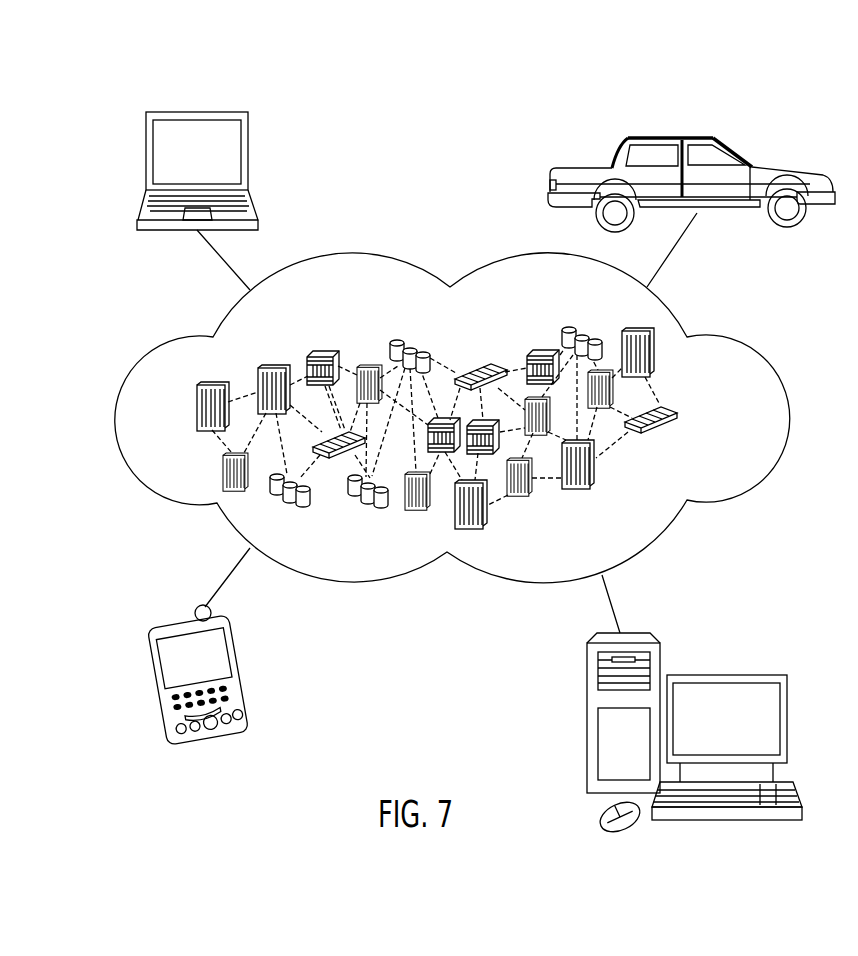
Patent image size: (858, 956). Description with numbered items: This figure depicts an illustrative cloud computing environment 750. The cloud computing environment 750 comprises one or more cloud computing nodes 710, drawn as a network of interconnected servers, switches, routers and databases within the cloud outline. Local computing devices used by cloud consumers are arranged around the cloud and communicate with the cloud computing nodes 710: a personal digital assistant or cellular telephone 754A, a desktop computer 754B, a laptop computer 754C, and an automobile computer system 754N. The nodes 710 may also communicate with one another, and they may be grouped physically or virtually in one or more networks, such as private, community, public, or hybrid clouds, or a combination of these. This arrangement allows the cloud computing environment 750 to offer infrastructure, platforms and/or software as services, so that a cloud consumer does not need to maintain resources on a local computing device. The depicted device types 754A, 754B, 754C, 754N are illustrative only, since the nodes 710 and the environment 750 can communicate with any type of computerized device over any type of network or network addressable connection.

The cloud computing environment 750 is at (739, 338).
The cloud computing nodes 710 is at (687, 418).
The personal digital assistant (PDA) or cellular telephone 754A is at (181, 620).
The desktop computer 754B is at (725, 673).
The laptop computer 754C is at (197, 112).
The automobile computer system 754N is at (675, 138).